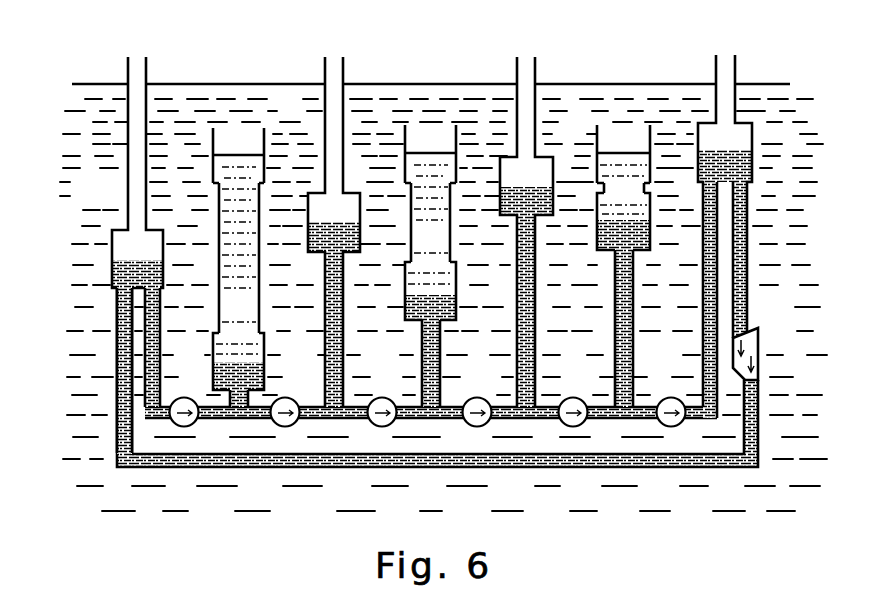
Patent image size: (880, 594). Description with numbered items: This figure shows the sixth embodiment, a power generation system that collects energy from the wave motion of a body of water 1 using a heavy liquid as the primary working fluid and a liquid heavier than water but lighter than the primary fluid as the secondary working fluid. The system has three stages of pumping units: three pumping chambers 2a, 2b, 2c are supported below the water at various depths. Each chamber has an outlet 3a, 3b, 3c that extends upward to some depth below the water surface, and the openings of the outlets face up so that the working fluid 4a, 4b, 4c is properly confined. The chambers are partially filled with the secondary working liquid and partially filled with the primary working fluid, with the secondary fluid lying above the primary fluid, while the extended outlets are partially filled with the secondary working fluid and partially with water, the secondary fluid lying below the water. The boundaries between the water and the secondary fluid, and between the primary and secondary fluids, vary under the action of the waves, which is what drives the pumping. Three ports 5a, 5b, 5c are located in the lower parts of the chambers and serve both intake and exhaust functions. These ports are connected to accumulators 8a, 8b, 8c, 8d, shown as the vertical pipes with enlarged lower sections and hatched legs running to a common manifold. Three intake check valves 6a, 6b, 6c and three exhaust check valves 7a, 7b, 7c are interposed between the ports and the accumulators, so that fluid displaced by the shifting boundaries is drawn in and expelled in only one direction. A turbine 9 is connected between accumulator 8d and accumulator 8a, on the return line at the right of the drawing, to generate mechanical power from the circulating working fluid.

The body of water 1 is at (295, 113).
The pumping chamber 2a is at (238, 361).
The pumping chamber 2b is at (430, 291).
The pumping chamber 2c is at (623, 221).
The outlet 3a is at (241, 147).
The outlet 3b is at (433, 145).
The outlet 3c is at (628, 145).
The working fluid 4a is at (244, 316).
The working fluid 4b is at (435, 248).
The working fluid 4c is at (625, 196).
The port 5a is at (240, 393).
The port 5b is at (432, 323).
The port 5c is at (628, 253).
The intake check valve 6a is at (195, 398).
The intake check valve 6b is at (390, 397).
The intake check valve 6c is at (584, 398).
The exhaust check valve 7a is at (297, 402).
The exhaust check valve 7b is at (467, 399).
The exhaust check valve 7c is at (657, 398).
The accumulator 8a is at (122, 230).
The accumulator 8b is at (351, 193).
The accumulator 8c is at (555, 176).
The accumulator 8d is at (752, 136).
The turbine 9 is at (758, 343).